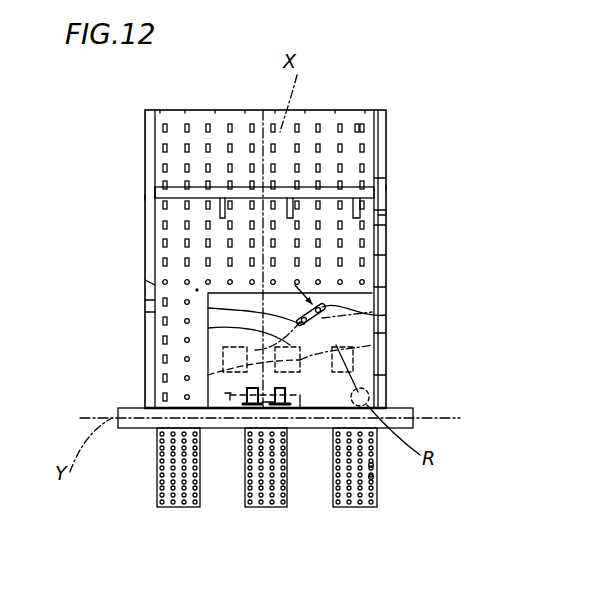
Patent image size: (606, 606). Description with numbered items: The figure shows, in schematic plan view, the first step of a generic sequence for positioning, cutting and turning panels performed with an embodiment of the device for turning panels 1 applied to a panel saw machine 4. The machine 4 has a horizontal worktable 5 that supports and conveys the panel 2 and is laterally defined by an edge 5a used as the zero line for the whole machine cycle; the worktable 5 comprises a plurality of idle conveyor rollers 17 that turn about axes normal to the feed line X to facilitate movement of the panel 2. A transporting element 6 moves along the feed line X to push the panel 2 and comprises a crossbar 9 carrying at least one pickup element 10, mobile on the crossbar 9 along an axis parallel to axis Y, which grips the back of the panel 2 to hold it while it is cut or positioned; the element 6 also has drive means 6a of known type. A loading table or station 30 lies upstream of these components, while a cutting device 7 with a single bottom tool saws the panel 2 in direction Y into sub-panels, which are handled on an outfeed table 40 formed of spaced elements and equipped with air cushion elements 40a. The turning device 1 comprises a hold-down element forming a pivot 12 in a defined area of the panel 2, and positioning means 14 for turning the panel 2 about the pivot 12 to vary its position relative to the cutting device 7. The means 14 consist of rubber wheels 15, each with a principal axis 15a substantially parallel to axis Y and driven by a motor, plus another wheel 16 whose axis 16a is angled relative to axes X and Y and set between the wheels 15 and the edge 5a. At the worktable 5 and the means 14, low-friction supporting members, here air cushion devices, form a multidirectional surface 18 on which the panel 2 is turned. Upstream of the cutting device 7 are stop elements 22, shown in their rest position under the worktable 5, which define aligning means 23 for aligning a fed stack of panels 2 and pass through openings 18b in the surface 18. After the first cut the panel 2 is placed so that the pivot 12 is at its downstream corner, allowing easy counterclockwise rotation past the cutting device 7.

The panel saw machine 4 is at (453, 93).
The loading table or station 30 is at (358, 126).
The pickup element 10 is at (229, 128).
The crossbar 9 is at (180, 190).
The transporting element 6 is at (160, 193).
The drive means 6a is at (140, 195).
The edge 5a is at (380, 220).
The positioning means 14 is at (335, 268).
The device for turning panels 1 is at (327, 283).
The multidirectional surface 18 is at (195, 288).
The horizontal worktable 5 is at (155, 283).
The idle conveyor rollers 17 is at (155, 312).
The panel 2 is at (247, 343).
The wheel 16 is at (325, 297).
The axis 16a is at (386, 306).
The aligning means 23 is at (223, 352).
The stop elements 22 is at (208, 375).
The pivot 12 is at (392, 375).
The openings 18b is at (208, 398).
The principal axis 15a is at (222, 412).
The roller or rubber wheel 15 is at (257, 412).
The cutting device 7 is at (163, 420).
The outfeed table 40 is at (155, 495).
The air cushion elements 40a is at (372, 478).